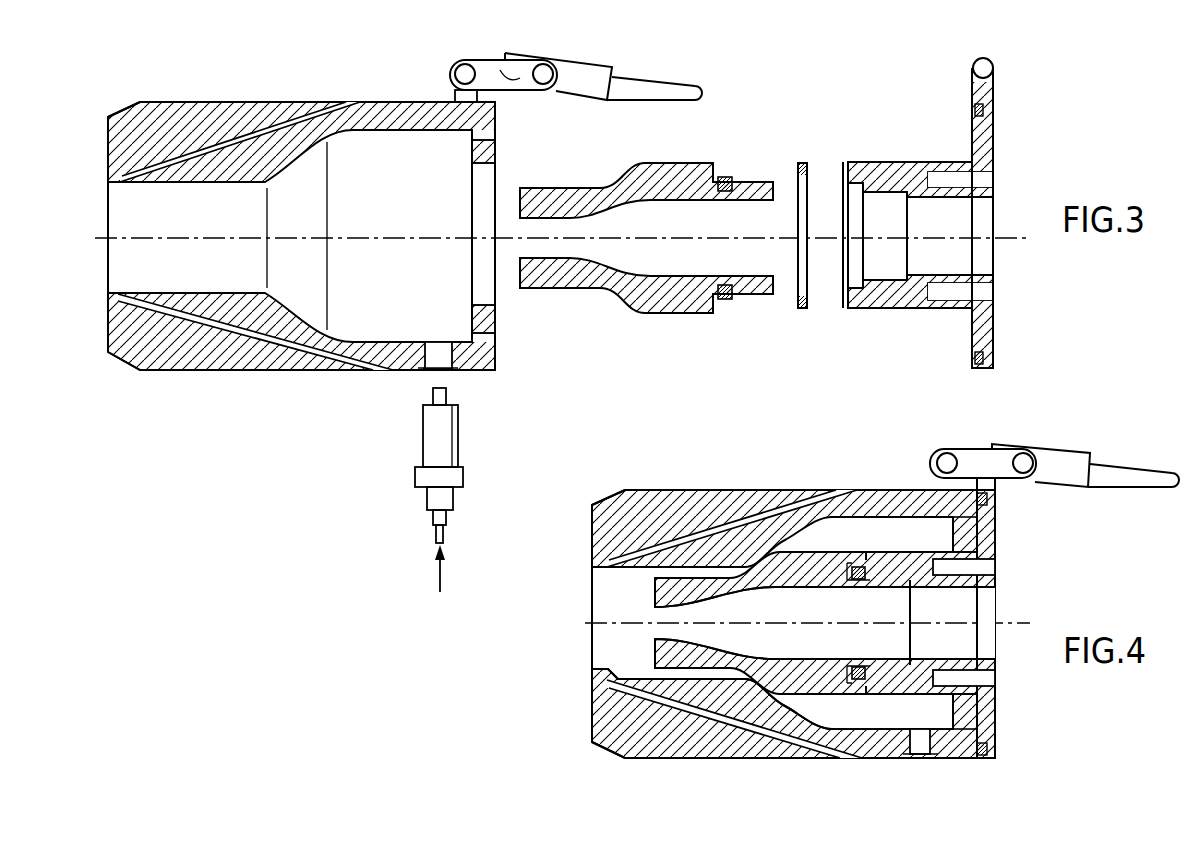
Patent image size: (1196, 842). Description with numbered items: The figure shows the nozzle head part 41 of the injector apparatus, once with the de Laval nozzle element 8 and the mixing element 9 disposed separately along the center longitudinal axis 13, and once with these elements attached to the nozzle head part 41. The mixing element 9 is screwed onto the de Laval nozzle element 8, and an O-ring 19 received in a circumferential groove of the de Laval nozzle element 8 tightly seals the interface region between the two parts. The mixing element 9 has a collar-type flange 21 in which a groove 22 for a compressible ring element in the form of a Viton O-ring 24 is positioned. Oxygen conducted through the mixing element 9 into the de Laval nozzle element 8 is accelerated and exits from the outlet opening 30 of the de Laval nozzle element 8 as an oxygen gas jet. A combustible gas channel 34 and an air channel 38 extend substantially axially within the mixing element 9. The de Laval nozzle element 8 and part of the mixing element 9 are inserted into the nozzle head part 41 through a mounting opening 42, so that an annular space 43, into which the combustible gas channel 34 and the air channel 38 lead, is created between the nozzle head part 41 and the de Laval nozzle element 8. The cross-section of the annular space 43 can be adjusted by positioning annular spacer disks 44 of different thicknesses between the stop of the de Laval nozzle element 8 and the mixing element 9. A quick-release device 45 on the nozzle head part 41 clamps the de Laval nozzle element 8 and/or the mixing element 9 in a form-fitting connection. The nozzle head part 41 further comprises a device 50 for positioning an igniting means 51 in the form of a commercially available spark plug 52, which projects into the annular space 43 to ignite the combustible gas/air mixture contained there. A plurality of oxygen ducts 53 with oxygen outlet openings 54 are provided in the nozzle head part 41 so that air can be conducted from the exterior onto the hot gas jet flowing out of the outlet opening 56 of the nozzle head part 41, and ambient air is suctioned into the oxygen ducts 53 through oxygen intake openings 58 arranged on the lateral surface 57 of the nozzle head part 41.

In FIG. 3, the de Laval nozzle element 8 is at (743, 142).
In FIG. 4, the de Laval nozzle element 8 is at (795, 540).
In FIG. 3, the mixing element 9 is at (995, 189).
In FIG. 4, the mixing element 9 is at (909, 565).
In FIG. 3, the center longitudinal axis 13 is at (103, 239).
In FIG. 4, the center longitudinal axis 13 is at (591, 624).
In FIG. 3, the O-ring 19 is at (725, 298).
In FIG. 4, the O-ring 19 is at (857, 566).
In FIG. 3, the collar-type flange 21 is at (984, 90).
In FIG. 4, the groove 22 is at (992, 744).
In FIG. 4, the Viton O-ring 24 is at (983, 757).
In FIG. 4, the outlet opening 30 is at (652, 610).
In FIG. 4, the combustible gas channel 34 is at (992, 567).
In FIG. 4, the air channel 38 is at (990, 717).
In FIG. 3, the nozzle head part 41 is at (265, 88).
In FIG. 4, the nozzle head part 41 is at (652, 505).
In FIG. 3, the mounting opening 42 is at (495, 272).
In FIG. 4, the annular space 43 is at (813, 708).
In FIG. 3, the annular spacer disk 44 is at (801, 160).
In FIG. 3, the quick-release device 45 is at (522, 70).
In FIG. 4, the quick-release device 45 is at (1060, 463).
In FIG. 3, the device for positioning igniting means 50 is at (437, 360).
In FIG. 4, the device for positioning igniting means 50 is at (922, 742).
In FIG. 3, the igniting means 51 is at (440, 583).
In FIG. 3, the spark plug 52 is at (446, 425).
In FIG. 4, the oxygen duct 53 is at (728, 530).
In FIG. 4, the oxygen outlet opening 54 is at (610, 673).
In FIG. 3, the outlet opening 56 is at (132, 205).
In FIG. 4, the outlet opening 56 is at (592, 637).
In FIG. 3, the lateral surface 57 is at (185, 102).
In FIG. 4, the lateral surface 57 is at (713, 760).
In FIG. 3, the oxygen intake opening 58 is at (357, 104).
In FIG. 4, the oxygen intake opening 58 is at (845, 760).